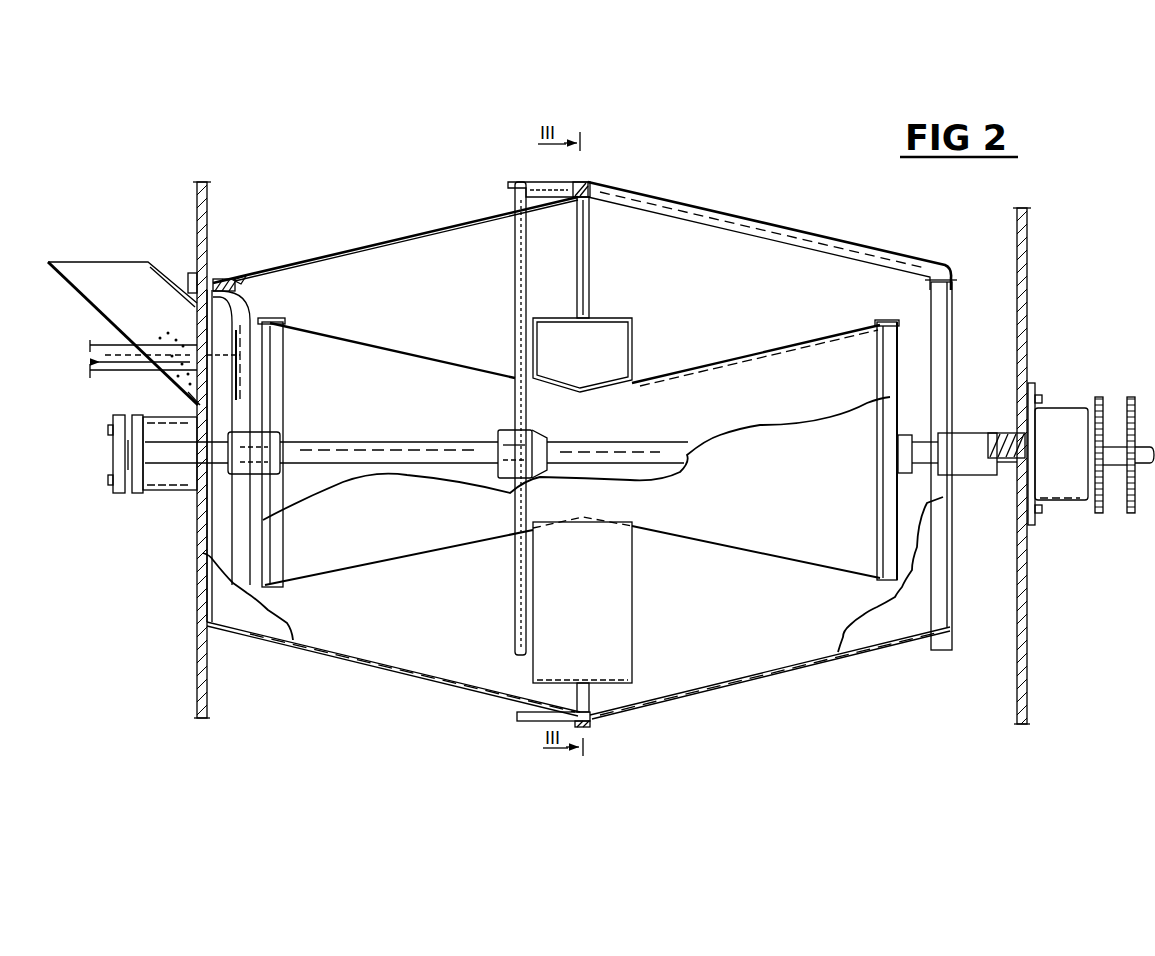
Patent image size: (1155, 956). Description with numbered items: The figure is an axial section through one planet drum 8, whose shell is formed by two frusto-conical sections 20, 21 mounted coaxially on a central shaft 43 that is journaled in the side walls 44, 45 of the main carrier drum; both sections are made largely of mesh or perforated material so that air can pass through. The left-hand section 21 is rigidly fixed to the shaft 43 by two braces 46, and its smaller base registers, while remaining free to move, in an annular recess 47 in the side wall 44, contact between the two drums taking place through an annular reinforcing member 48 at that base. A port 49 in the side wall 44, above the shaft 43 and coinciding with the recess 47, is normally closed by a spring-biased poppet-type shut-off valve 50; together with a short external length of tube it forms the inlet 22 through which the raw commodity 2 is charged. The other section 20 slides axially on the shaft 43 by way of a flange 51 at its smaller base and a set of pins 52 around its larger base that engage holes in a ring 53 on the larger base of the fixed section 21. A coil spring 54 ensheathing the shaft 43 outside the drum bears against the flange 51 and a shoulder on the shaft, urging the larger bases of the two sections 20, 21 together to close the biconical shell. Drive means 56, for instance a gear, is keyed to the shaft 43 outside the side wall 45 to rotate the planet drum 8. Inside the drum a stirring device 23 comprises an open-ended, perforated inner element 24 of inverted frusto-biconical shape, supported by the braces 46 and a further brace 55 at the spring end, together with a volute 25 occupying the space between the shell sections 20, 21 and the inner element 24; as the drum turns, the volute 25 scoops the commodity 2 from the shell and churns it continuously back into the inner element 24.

The raw commodity 2 is at (168, 338).
The planet drum 8 is at (612, 180).
The frusto-conical section 20 is at (732, 225).
The frusto-conical section 21 is at (443, 223).
The inlet 22 is at (132, 280).
The stirring device 23 is at (645, 340).
The inner element 24 is at (345, 333).
The volute 25 is at (608, 603).
The central shaft 43 is at (353, 457).
The side wall 44 is at (202, 665).
The side wall 45 is at (1028, 615).
The braces 46 is at (267, 500).
The annular recess 47 is at (205, 283).
The annular reinforcing member 48 is at (247, 277).
The port 49 is at (200, 403).
The shut-off valve 50 is at (173, 380).
The flange 51 is at (953, 347).
The pins 52 is at (520, 713).
The ring 53 is at (590, 708).
The coil spring 54 is at (1000, 433).
The brace 55 is at (905, 340).
The rotating means 56 is at (1095, 398).